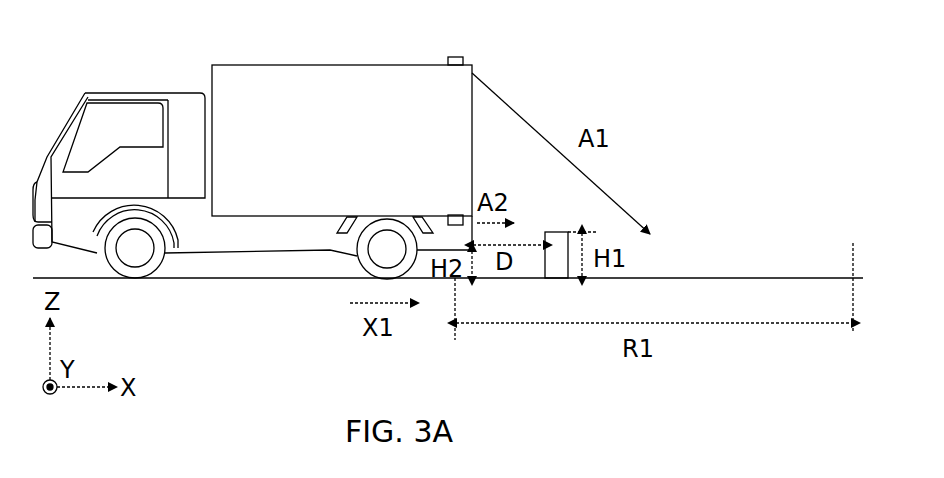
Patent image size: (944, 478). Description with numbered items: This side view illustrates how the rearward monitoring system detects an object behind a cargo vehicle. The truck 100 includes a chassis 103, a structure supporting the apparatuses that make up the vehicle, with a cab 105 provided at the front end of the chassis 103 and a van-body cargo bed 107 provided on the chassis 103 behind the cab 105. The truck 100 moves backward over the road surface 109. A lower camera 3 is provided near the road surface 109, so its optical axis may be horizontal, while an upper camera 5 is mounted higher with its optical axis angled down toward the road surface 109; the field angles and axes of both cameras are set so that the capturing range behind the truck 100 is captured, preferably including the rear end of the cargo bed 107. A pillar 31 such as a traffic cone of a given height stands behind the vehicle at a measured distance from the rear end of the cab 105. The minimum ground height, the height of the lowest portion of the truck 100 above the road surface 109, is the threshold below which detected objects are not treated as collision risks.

The truck 100 is at (182, 80).
The cab 105 is at (85, 93).
The cargo bed 107 is at (270, 83).
The lower camera 3 is at (455, 214).
The upper camera 5 is at (465, 58).
The pillar 31 is at (557, 250).
The chassis 103 is at (257, 237).
The road surface 109 is at (327, 282).